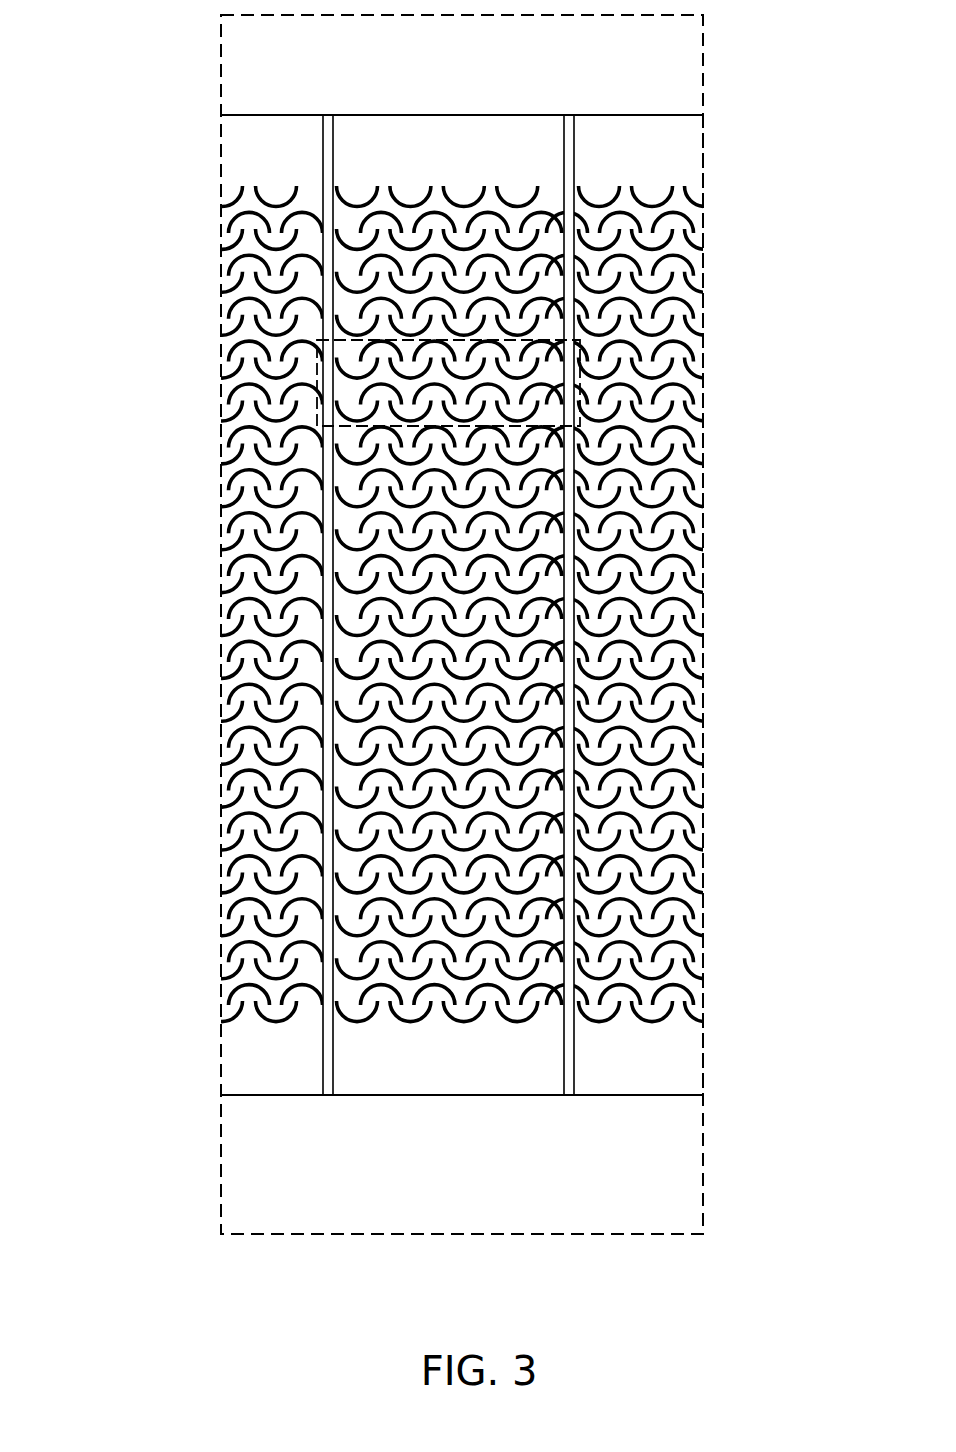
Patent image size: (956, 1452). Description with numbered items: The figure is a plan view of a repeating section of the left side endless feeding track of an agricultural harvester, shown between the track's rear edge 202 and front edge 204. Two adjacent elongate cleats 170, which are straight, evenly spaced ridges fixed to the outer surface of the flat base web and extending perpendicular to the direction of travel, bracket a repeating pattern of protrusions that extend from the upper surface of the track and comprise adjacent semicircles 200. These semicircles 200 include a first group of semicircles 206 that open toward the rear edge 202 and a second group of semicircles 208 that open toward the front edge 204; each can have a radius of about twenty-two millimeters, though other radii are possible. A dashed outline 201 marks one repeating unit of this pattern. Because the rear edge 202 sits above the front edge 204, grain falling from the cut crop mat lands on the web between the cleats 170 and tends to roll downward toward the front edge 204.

The semicircles 200 is at (153, 338).
The rear edge 202 is at (263, 112).
The front edge 204 is at (248, 1095).
The elongate cleats 170 is at (335, 163).
The repeating unit region 201 is at (590, 390).
The first group of semicircles 206 is at (700, 650).
The second group of semicircles 208 is at (697, 843).